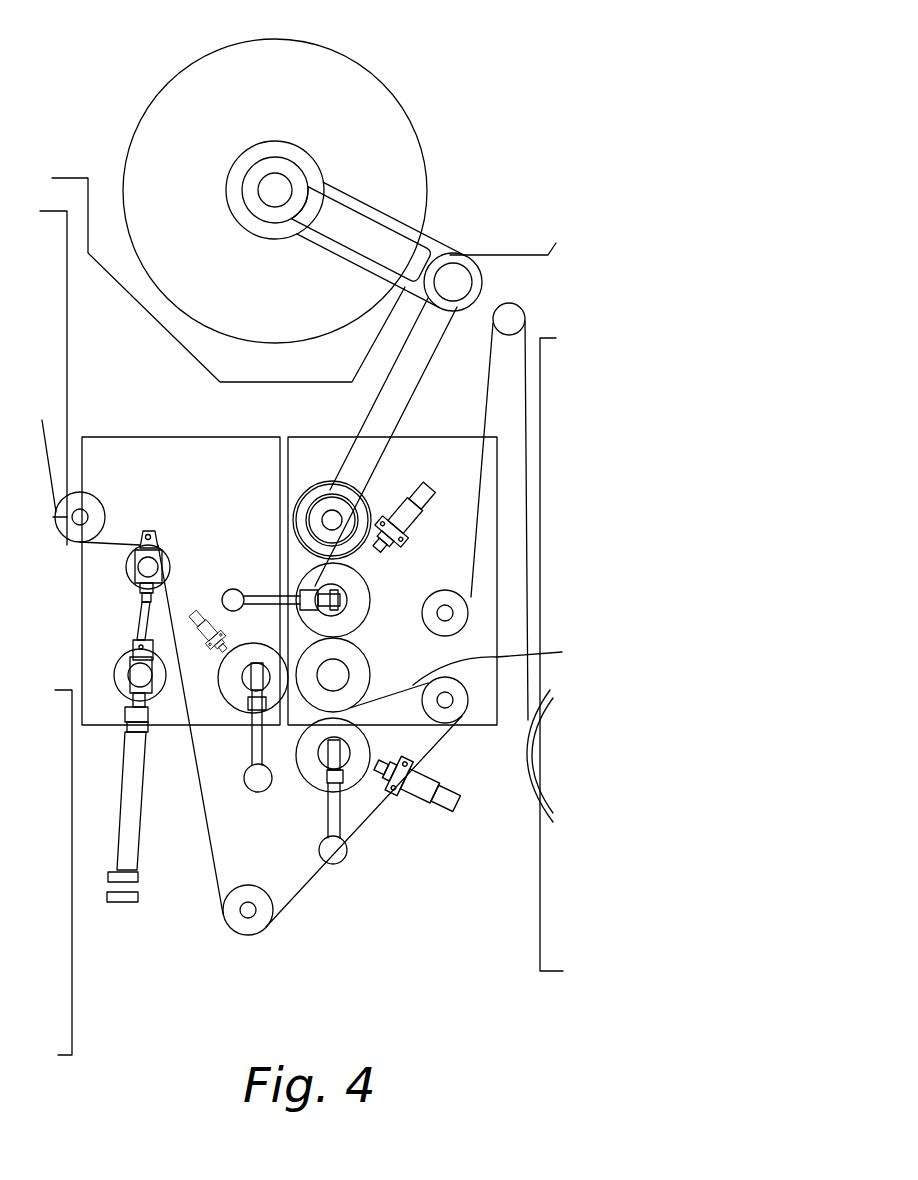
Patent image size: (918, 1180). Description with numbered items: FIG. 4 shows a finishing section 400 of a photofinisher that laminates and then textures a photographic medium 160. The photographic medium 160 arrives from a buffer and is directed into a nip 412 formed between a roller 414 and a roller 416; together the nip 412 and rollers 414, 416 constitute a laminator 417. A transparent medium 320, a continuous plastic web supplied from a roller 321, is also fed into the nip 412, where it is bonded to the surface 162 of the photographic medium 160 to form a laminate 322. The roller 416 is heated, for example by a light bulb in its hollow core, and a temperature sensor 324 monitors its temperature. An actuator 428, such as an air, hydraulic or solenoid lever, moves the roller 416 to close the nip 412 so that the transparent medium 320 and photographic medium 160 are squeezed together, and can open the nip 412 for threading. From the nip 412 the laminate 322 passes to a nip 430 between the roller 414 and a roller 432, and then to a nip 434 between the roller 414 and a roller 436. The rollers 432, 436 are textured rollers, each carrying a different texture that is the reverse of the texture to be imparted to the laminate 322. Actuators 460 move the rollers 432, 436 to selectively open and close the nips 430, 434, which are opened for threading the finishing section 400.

The finishing section 400 is at (466, 71).
The roller 321 is at (290, 150).
The transparent medium 320 is at (421, 366).
The photographic medium 160 is at (537, 333).
The surface 162 is at (483, 402).
The temperature sensor 324 is at (431, 496).
The laminator 417 is at (378, 582).
The actuator 428 is at (232, 589).
The roller 416 is at (360, 617).
The nip 412 is at (357, 640).
The roller 414 is at (365, 673).
The nip 430 is at (292, 650).
The laminate 322 is at (474, 673).
The roller 432 is at (232, 693).
The roller 436 is at (362, 743).
The nip 434 is at (347, 713).
The actuators 460 is at (263, 789).